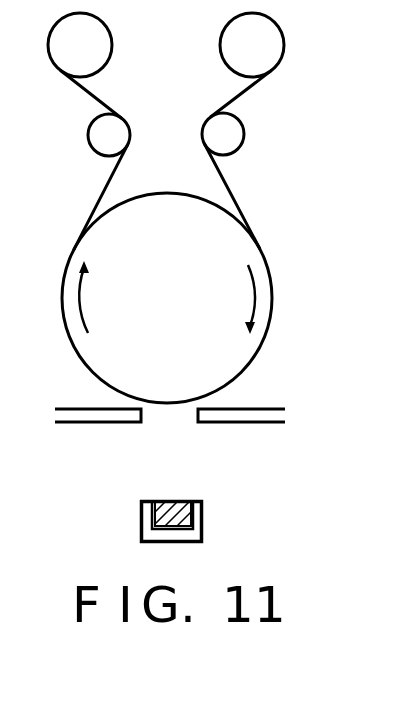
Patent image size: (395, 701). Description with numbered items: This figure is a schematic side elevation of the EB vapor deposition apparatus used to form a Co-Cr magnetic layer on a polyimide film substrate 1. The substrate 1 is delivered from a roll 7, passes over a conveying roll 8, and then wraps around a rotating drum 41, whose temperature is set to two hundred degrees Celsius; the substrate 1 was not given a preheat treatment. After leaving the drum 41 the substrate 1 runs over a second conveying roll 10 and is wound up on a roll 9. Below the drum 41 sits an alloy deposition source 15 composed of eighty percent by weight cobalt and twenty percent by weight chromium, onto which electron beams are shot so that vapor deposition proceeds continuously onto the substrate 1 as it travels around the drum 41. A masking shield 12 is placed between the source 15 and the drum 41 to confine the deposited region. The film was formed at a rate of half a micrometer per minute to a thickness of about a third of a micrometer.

The polyimide film substrate 1 is at (250, 92).
The roll 7 is at (274, 48).
The conveying roll 8 is at (232, 135).
The roll 9 is at (101, 47).
The conveying roll 10 is at (118, 137).
The rotating drum 41 is at (233, 248).
The masking shield 12 is at (243, 406).
The alloy deposition source 15 is at (195, 522).